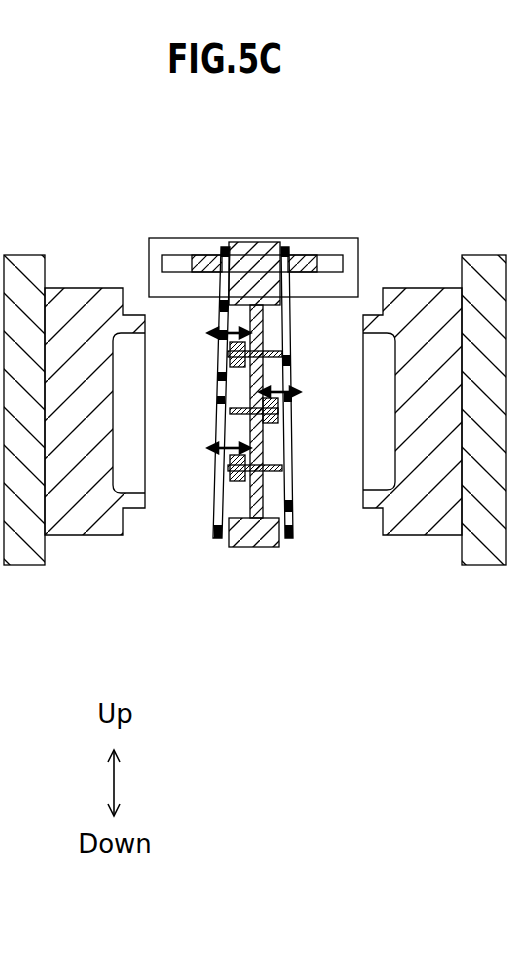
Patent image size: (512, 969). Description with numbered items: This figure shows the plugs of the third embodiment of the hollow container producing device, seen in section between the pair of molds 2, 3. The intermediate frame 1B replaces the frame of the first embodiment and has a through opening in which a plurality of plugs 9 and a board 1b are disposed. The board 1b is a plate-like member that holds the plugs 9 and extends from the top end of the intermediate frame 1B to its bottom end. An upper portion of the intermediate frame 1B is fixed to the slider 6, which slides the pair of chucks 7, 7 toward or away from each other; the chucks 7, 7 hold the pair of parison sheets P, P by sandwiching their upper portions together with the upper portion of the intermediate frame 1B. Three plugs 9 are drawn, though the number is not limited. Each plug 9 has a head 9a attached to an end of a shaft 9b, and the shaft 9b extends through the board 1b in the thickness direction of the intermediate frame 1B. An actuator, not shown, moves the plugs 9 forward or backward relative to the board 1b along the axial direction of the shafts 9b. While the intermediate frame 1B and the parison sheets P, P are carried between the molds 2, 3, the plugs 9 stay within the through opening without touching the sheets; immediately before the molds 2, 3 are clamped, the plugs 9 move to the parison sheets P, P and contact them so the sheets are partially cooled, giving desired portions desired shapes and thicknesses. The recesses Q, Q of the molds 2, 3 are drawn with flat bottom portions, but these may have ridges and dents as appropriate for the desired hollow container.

The mold 2 is at (85, 517).
The mold 3 is at (435, 518).
The slider 6 is at (357, 238).
The chuck 7 is at (212, 255).
The intermediate frame 1B is at (238, 548).
The board 1b is at (263, 323).
The plug 9 is at (253, 449).
The head 9a is at (238, 378).
The shaft 9b is at (262, 368).
The parison sheet P is at (214, 540).
The recess Q is at (145, 358).